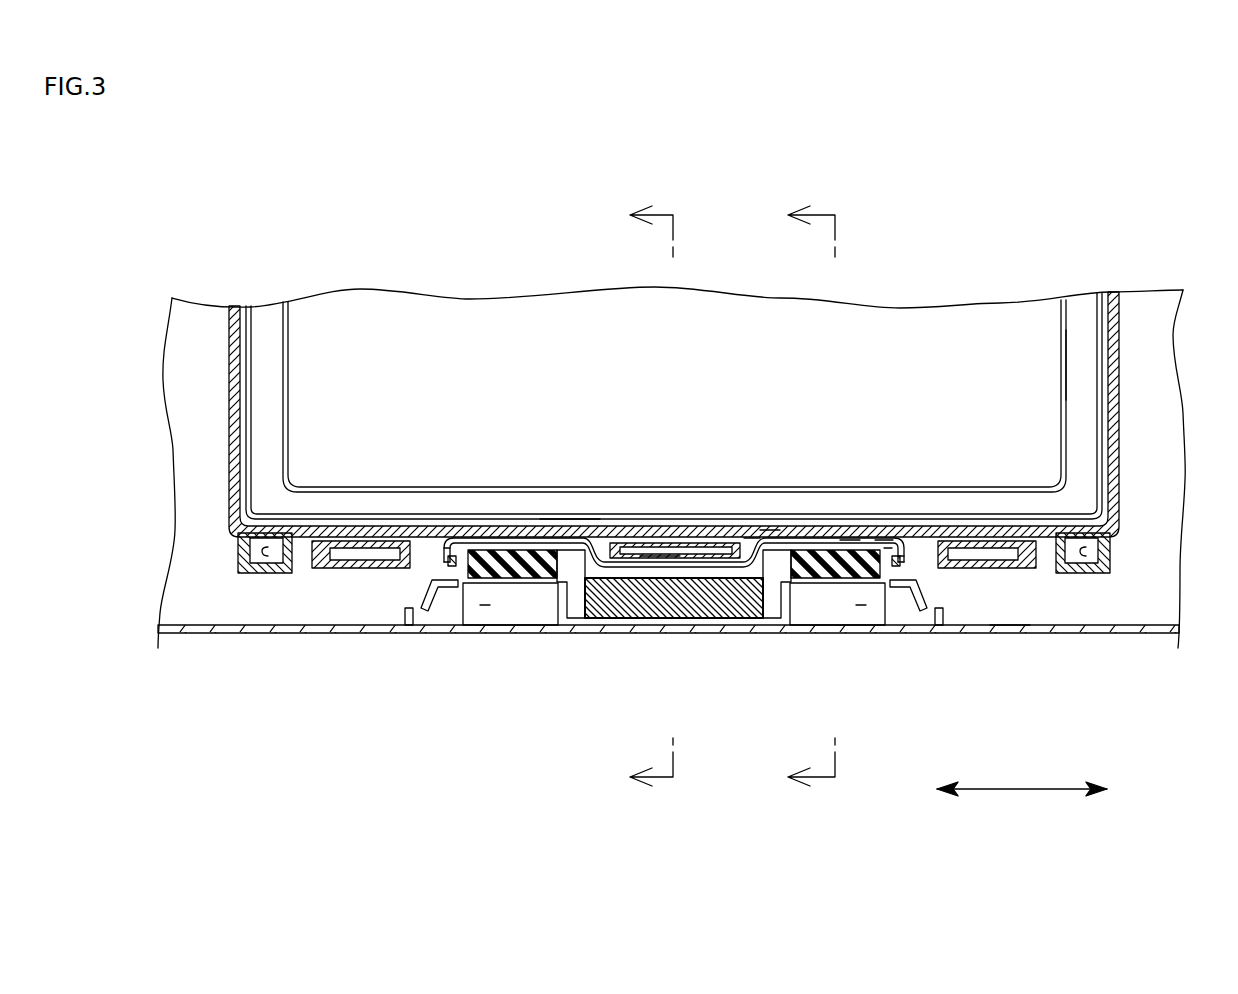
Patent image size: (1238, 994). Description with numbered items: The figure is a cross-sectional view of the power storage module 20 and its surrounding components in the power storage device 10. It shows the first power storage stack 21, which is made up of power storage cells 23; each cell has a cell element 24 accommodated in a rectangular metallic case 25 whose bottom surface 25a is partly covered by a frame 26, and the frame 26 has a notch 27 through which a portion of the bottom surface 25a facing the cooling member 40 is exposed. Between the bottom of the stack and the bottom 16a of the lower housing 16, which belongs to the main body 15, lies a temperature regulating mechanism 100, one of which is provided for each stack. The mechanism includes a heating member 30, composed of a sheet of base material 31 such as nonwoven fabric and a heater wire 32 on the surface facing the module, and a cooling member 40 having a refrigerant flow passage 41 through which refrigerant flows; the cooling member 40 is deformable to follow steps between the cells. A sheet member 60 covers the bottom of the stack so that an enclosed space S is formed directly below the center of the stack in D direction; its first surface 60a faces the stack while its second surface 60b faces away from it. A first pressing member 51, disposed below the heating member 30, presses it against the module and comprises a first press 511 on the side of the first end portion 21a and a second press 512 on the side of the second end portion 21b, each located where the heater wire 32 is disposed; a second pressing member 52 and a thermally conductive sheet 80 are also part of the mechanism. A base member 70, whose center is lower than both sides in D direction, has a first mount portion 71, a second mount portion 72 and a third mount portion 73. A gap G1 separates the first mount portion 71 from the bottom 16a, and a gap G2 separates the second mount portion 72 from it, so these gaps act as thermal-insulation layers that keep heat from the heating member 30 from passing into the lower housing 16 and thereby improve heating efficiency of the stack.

The power storage device 10 is at (1180, 168).
The main body 15 is at (668, 673).
The lower housing 16 is at (226, 632).
The bottom of lower housing 16a is at (1008, 630).
The power storage module 20 is at (671, 392).
The first power storage stack 21 is at (302, 228).
The first end portion 21a is at (269, 545).
The second end portion 21b is at (1082, 553).
The power storage cell 23 is at (1157, 366).
The cell element 24 is at (1062, 368).
The case 25 is at (1100, 418).
The bottom surface 25a is at (566, 527).
The frame 26 is at (1110, 482).
The notch 27 is at (770, 527).
The heating member 30 is at (1000, 253).
The base material 31 is at (850, 539).
The heater wire 32 is at (884, 543).
The cooling member 40 is at (600, 539).
The refrigerant flow passage 41 is at (606, 548).
The first pressing member 51 is at (880, 835).
The first press 511 is at (499, 586).
The second press 512 is at (863, 608).
The second pressing member 52 is at (660, 549).
The sheet member 60 is at (443, 549).
The first surface 60a is at (887, 548).
The second surface 60b is at (883, 549).
The base member 70 is at (830, 688).
The first mount portion 71 is at (528, 581).
The second mount portion 72 is at (818, 581).
The third mount portion 73 is at (673, 600).
The thermally conductive sheet 80 is at (715, 545).
The temperature regulating mechanism 100 is at (403, 613).
The enclosed space S is at (752, 539).
The gap G1 is at (484, 610).
The gap G2 is at (861, 610).